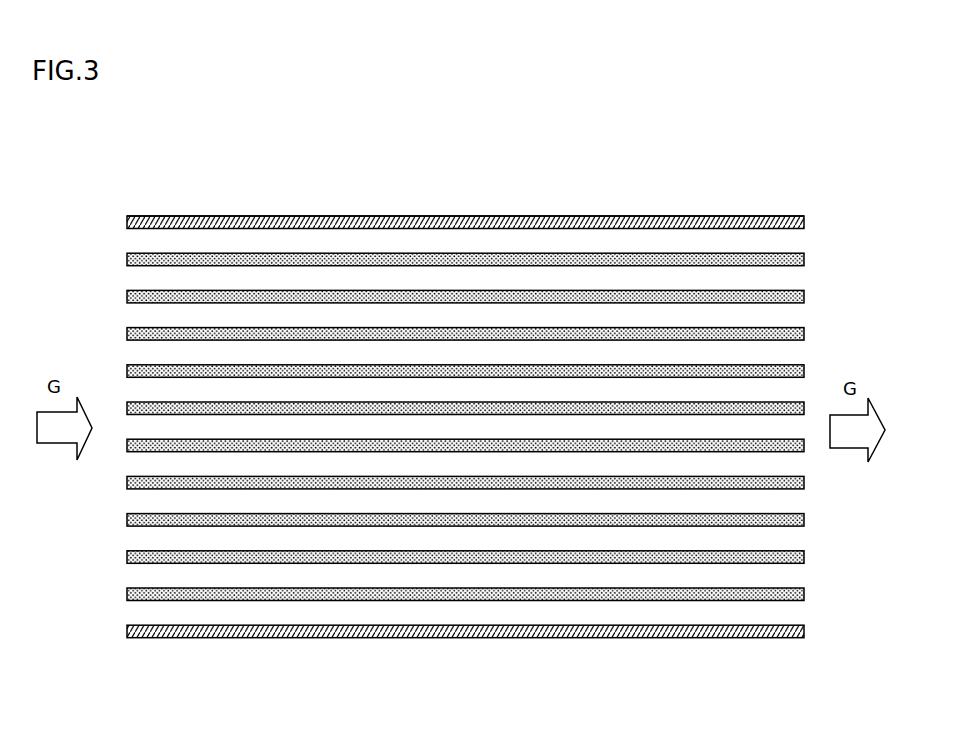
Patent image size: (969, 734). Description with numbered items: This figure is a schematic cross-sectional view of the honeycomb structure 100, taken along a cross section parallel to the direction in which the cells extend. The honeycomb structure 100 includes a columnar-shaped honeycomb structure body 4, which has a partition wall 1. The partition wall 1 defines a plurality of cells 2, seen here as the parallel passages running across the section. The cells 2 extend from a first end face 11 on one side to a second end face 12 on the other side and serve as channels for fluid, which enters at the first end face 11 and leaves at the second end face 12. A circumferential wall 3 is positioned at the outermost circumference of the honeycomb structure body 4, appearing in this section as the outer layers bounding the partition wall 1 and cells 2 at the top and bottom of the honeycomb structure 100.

The honeycomb structure 100 is at (798, 128).
The partition wall 1 is at (498, 262).
The cells 2 is at (145, 317).
The circumferential wall 3 is at (565, 226).
The honeycomb structure body 4 is at (627, 211).
The first end face 11 is at (110, 623).
The second end face 12 is at (820, 622).